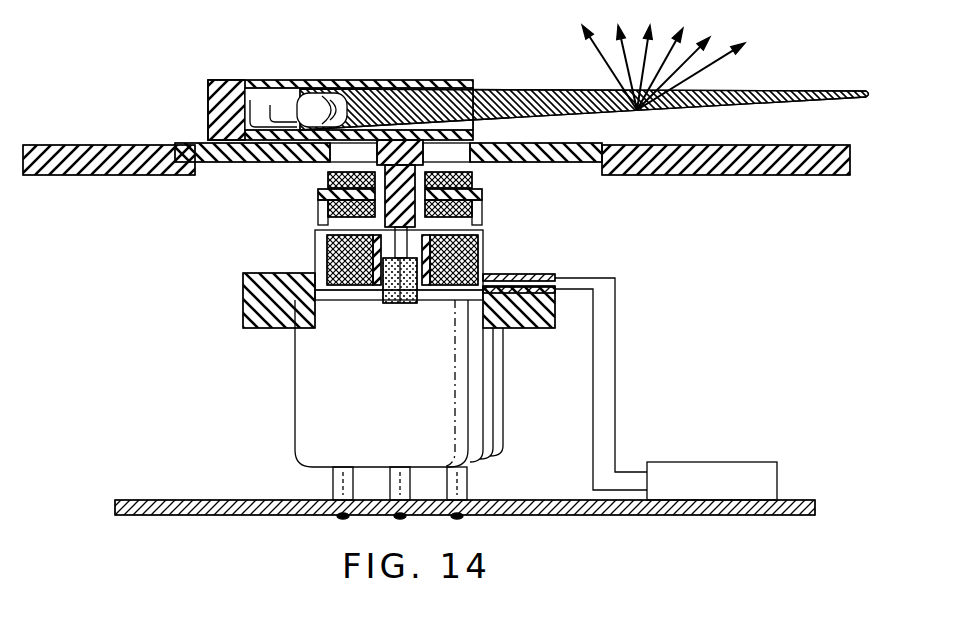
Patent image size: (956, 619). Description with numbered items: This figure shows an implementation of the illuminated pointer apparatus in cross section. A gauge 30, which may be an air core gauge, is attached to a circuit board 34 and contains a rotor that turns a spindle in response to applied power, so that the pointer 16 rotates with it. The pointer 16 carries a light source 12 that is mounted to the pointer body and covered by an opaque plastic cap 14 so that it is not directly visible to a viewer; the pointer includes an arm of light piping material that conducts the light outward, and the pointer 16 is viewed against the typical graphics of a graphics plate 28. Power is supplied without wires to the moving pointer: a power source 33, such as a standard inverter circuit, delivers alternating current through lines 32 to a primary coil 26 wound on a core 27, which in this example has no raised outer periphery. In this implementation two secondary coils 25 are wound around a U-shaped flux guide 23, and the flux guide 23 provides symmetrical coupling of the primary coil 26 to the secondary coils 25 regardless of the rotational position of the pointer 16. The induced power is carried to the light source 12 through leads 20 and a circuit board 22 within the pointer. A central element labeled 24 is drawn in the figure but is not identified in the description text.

The light source 12 is at (317, 97).
The opaque plastic cap 14 is at (417, 80).
The pointer 16 is at (770, 88).
The leads 20 is at (274, 97).
The circuit board 22 is at (233, 163).
The U-shaped flux guide 23 is at (323, 211).
The magnet 24 is at (403, 307).
The secondary coils 25 is at (327, 178).
The primary coil 26 is at (353, 290).
The core 27 is at (317, 245).
The graphics plate 28 is at (767, 177).
The gauge 30 is at (322, 410).
The lines 32 is at (597, 410).
The power source 33 is at (733, 462).
The circuit board 34 is at (793, 500).